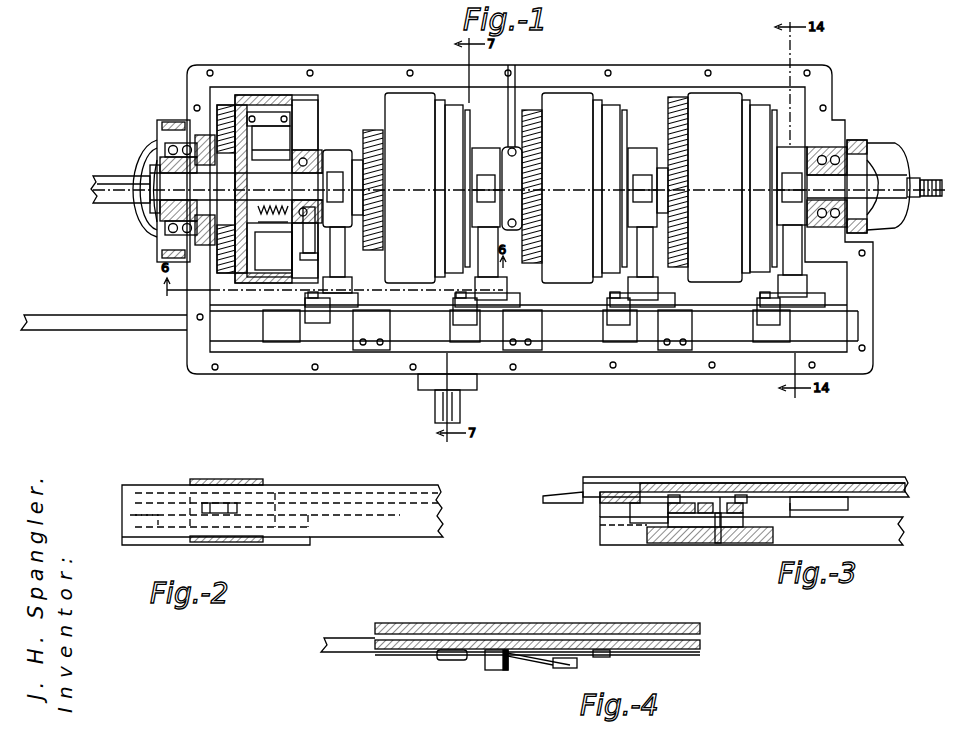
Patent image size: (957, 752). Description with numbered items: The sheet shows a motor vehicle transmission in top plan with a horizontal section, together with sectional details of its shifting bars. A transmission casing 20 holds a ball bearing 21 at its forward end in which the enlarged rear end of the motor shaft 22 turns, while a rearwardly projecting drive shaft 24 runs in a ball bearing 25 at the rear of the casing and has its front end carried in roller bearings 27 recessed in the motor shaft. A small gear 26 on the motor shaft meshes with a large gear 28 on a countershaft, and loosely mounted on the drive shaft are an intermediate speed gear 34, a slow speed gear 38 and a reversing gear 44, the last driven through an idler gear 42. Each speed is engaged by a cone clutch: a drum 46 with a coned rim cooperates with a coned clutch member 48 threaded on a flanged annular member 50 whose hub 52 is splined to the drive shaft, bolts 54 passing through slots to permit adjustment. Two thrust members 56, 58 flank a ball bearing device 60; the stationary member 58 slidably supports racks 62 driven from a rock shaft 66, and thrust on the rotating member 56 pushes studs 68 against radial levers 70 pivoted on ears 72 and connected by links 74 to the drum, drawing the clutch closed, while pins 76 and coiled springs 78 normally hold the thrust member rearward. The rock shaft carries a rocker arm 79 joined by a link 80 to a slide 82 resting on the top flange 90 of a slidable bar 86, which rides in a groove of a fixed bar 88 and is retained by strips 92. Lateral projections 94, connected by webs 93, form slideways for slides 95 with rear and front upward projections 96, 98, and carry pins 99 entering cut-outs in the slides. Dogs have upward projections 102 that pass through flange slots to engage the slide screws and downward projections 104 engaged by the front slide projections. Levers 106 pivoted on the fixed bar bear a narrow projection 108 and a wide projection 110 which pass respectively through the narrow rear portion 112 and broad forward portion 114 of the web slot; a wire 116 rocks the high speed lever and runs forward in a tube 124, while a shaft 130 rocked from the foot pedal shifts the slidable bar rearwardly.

In FIG. 1, the transmission casing 20 is at (822, 92).
In FIG. 1, the ball bearing 21 is at (163, 146).
In FIG. 1, the motor shaft 22 is at (104, 180).
In FIG. 1, the drive shaft 24 is at (190, 206).
In FIG. 1, the ball bearing 25 is at (845, 137).
In FIG. 1, the small gear 26 is at (212, 148).
In FIG. 1, the roller bearings 27 is at (210, 225).
In FIG. 1, the large gear 28 is at (218, 110).
In FIG. 1, the intermediate speed gear 34 is at (372, 130).
In FIG. 1, the slow speed gear 38 is at (533, 110).
In FIG. 1, the idler gear 42 is at (678, 97).
In FIG. 1, the reversing gear 44 is at (695, 126).
In FIG. 1, the drum 46 is at (226, 105).
In FIG. 1, the coned clutch member 48 is at (292, 100).
In FIG. 1, the flanged annular member 50 is at (300, 152).
In FIG. 1, the hub 52 is at (260, 240).
In FIG. 1, the bolts 54 is at (345, 267).
In FIG. 1, the thrust member 56 is at (318, 170).
In FIG. 1, the thrust member 58 is at (487, 155).
In FIG. 1, the ball bearing device 60 is at (309, 224).
In FIG. 1, the racks 62 is at (345, 202).
In FIG. 1, the rock shaft 66 is at (337, 252).
In FIG. 1, the studs 68 is at (306, 160).
In FIG. 1, the levers 70 is at (292, 100).
In FIG. 1, the ears 72 is at (282, 135).
In FIG. 1, the links 74 is at (266, 114).
In FIG. 1, the pins 76 is at (283, 224).
In FIG. 1, the coiled springs 78 is at (268, 216).
In FIG. 1, the rocker arm 79 is at (360, 298).
In FIG. 1, the link 80 is at (330, 300).
In FIG. 1, the slide 82 is at (312, 342).
In FIG. 3, the slidable bar 86 is at (870, 478).
In FIG. 3, the fixed bar 88 is at (908, 494).
In FIG. 4, the fixed bar 88 is at (420, 652).
In FIG. 1, the flange 90 is at (893, 301).
In FIG. 2, the flange 90 is at (402, 527).
In FIG. 1, the strips 92 is at (368, 350).
In FIG. 3, the webs 93 is at (880, 521).
In FIG. 3, the lateral projections 94 is at (695, 540).
In FIG. 3, the slides 95 is at (672, 538).
In FIG. 3, the upward projection 96 is at (738, 497).
In FIG. 3, the upward projection 98 is at (676, 498).
In FIG. 3, the pins 99 is at (720, 540).
In FIG. 2, the upward projections 102 is at (219, 504).
In FIG. 3, the downward projections 104 is at (715, 498).
In FIG. 4, the levers 106 is at (534, 660).
In FIG. 4, the narrow upward projection 108 is at (608, 657).
In FIG. 4, the wide projection 110 is at (502, 672).
In FIG. 3, the rear portion of slot 112 is at (830, 503).
In FIG. 3, the forward portion of slot 114 is at (650, 512).
In FIG. 4, the wire 116 is at (472, 662).
In FIG. 1, the tube 124 is at (157, 331).
In FIG. 1, the shaft 130 is at (436, 410).